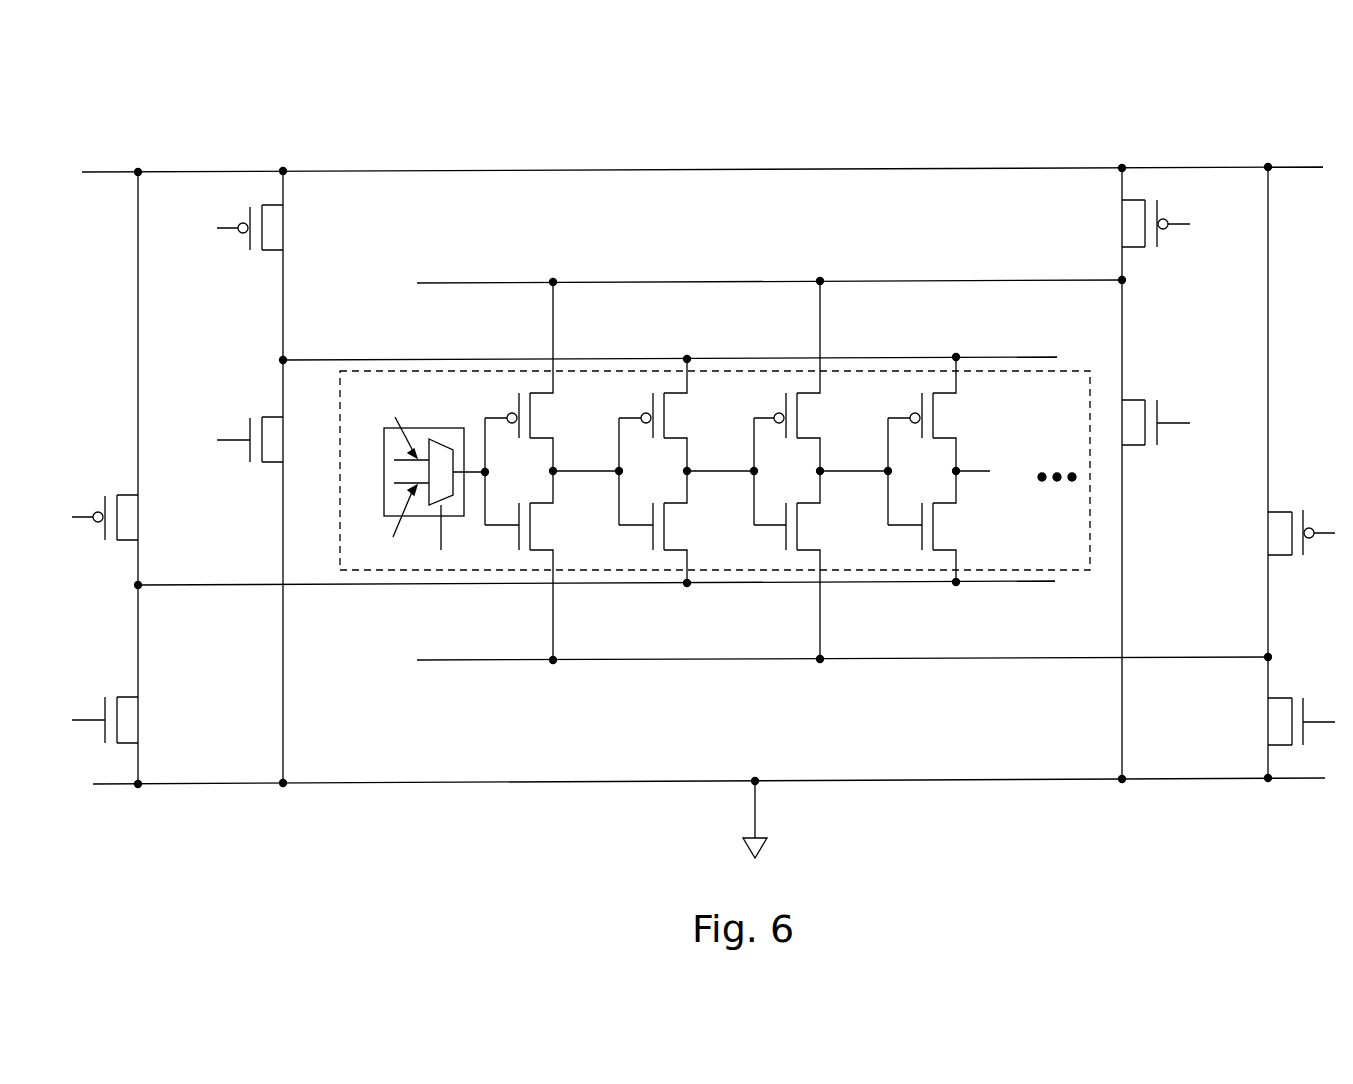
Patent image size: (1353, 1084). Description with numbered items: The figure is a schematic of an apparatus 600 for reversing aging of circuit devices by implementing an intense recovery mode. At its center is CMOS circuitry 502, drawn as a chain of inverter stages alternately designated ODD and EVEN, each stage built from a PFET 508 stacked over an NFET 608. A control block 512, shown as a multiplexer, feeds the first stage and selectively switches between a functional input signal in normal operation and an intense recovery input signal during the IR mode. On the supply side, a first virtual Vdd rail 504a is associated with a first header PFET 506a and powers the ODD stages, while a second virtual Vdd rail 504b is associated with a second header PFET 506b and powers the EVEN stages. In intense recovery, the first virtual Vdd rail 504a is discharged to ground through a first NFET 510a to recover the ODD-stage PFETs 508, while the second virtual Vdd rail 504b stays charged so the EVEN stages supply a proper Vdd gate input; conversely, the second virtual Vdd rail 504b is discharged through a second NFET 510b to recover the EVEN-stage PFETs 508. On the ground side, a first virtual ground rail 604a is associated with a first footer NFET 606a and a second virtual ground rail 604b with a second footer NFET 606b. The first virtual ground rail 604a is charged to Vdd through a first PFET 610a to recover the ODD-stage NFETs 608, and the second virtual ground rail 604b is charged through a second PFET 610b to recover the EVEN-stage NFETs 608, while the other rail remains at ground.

The apparatus 600 is at (185, 123).
The CMOS circuitry 502 is at (1092, 557).
The first virtual Vdd rail 504a is at (893, 282).
The second virtual Vdd rail 504b is at (318, 361).
The first header PFET 506a is at (1135, 247).
The second header PFET 506b is at (275, 252).
The PFETs 508 is at (547, 442).
The first NFET 510a is at (1135, 447).
The second NFET 510b is at (275, 463).
The control block 512 is at (385, 448).
The first virtual ground rail 604a is at (1062, 659).
The second virtual ground rail 604b is at (1038, 581).
The first footer NFET 606a is at (1283, 698).
The second footer NFET 606b is at (128, 693).
The NFETs 608 is at (533, 550).
The first PFET 610a is at (1282, 507).
The second PFET 610b is at (132, 493).